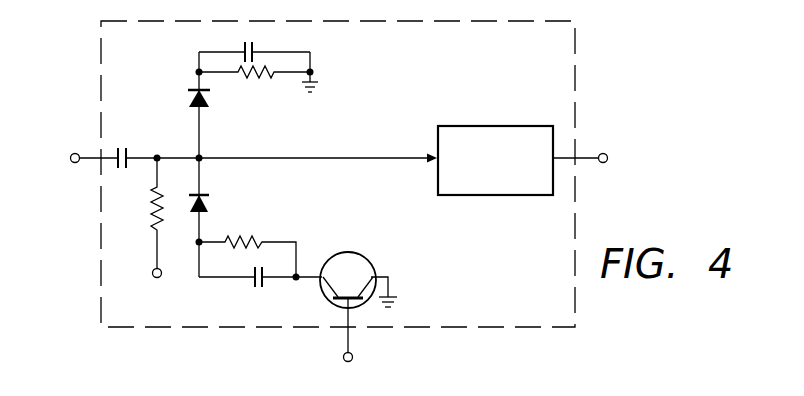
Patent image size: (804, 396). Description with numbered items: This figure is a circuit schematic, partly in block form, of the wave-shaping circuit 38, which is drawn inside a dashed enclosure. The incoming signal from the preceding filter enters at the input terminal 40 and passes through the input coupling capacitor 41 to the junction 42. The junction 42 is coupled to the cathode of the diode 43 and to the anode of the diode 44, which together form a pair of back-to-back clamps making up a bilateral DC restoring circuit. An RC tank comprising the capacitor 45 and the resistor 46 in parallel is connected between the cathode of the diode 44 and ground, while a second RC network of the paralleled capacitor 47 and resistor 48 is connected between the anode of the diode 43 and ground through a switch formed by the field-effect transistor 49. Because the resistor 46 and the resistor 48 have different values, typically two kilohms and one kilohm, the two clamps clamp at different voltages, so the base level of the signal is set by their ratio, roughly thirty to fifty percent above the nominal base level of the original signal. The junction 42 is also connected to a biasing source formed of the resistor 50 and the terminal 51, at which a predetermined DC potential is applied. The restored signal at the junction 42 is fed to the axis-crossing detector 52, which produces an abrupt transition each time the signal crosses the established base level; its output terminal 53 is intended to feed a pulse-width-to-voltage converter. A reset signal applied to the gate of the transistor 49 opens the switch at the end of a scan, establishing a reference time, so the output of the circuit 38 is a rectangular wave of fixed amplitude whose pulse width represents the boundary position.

The wave-shaping circuit 38 is at (575, 64).
The input terminal 40 is at (78, 153).
The input coupling capacitor 41 is at (128, 151).
The junction 42 is at (201, 157).
The diode 43 is at (209, 205).
The diode 44 is at (191, 101).
The capacitor 45 is at (254, 48).
The resistor 46 is at (266, 75).
The capacitor 47 is at (264, 284).
The resistor 48 is at (247, 240).
The field-effect transistor 49 is at (356, 253).
The resistor 50 is at (154, 214).
The terminal 51 is at (160, 278).
The axis-crossing detector 52 is at (479, 126).
The output terminal 53 is at (605, 153).